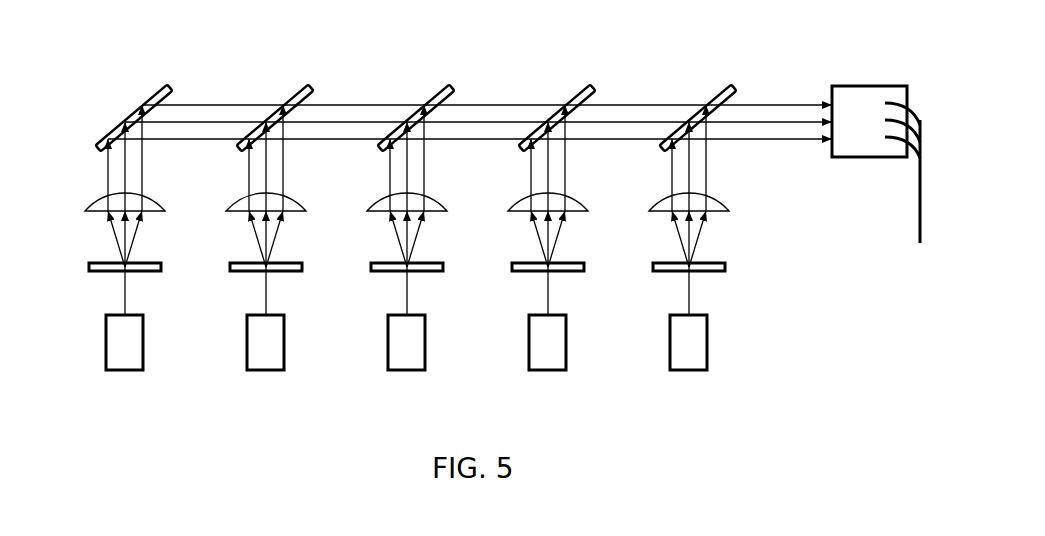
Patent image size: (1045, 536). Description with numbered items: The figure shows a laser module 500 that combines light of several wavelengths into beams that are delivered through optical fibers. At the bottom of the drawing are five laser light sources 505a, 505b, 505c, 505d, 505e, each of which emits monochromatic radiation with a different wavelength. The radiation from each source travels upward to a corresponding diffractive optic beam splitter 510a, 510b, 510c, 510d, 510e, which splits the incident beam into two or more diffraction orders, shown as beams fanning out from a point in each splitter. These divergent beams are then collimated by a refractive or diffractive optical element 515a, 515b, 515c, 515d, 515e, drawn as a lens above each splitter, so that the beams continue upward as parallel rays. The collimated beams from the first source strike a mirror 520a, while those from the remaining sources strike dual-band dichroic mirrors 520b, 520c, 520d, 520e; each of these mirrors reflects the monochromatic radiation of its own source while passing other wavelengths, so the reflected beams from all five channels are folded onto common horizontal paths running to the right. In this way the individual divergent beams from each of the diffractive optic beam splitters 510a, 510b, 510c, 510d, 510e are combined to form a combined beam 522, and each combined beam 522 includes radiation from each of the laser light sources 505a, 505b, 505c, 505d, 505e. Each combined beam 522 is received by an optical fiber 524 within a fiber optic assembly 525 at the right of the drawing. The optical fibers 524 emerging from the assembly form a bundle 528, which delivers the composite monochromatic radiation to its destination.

The laser module 500 is at (112, 45).
The laser light source 505a is at (124, 370).
The laser light source 505b is at (265, 370).
The laser light source 505c is at (406, 370).
The laser light source 505d is at (547, 370).
The laser light source 505e is at (688, 370).
The diffractive optic beam splitter 510a is at (142, 270).
The diffractive optic beam splitter 510b is at (283, 270).
The diffractive optic beam splitter 510c is at (424, 270).
The diffractive optic beam splitter 510d is at (565, 270).
The diffractive optic beam splitter 510e is at (706, 270).
The optical element 515a is at (157, 212).
The optical element 515b is at (298, 212).
The optical element 515c is at (439, 212).
The optical element 515d is at (580, 212).
The optical element 515e is at (721, 212).
The mirror 520a is at (170, 85).
The dual-band dichroic mirror 520b is at (311, 85).
The dual-band dichroic mirror 520c is at (452, 85).
The dual-band dichroic mirror 520d is at (593, 85).
The dual-band dichroic mirror 520e is at (734, 85).
The combined beam 522 is at (773, 140).
The optical fiber 524 is at (893, 145).
The fiber optic assembly 525 is at (850, 85).
The bundle 528 is at (917, 210).